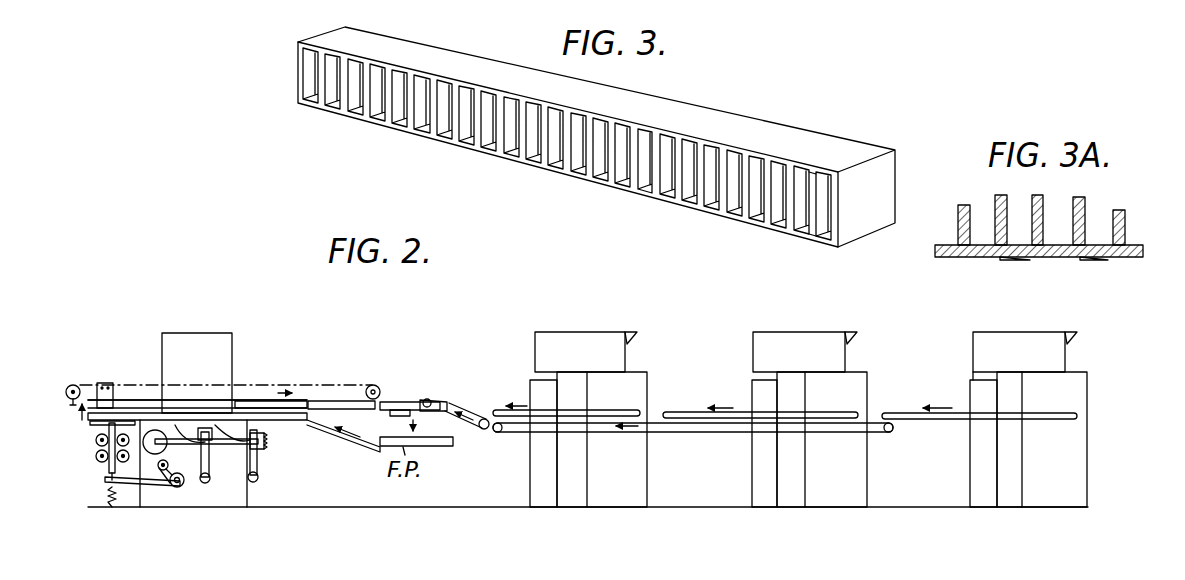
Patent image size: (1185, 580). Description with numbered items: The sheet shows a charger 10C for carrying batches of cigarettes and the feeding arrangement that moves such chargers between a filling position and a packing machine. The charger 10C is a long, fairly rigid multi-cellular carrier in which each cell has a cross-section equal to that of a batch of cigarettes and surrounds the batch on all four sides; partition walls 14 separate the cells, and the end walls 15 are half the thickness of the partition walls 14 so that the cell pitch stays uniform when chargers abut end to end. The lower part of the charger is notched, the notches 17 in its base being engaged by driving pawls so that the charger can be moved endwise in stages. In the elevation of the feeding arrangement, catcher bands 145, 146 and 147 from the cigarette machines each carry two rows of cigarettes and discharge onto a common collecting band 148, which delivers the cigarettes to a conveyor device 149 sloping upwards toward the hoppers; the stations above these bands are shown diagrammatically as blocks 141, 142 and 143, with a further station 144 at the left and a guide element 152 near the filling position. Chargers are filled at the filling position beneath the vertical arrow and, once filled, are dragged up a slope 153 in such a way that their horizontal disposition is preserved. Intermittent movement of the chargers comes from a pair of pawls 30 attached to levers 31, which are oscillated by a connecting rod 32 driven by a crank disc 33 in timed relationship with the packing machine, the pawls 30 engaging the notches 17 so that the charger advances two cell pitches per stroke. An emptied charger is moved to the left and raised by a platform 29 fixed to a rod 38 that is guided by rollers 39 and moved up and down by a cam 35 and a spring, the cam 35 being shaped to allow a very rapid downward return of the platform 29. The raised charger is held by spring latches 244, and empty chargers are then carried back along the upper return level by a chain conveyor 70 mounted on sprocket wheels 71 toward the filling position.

In FIG. 3, the charger 10C is at (880, 190).
In FIG. 3A, the charger 10C is at (975, 258).
In FIG. 2, the charger 10C is at (245, 405).
In FIG. 3, the partition walls 14 is at (745, 168).
In FIG. 3A, the partition walls 14 is at (1085, 212).
In FIG. 3, the end walls 15 is at (833, 212).
In FIG. 3A, the notches 17 is at (1015, 259).
In FIG. 2, the platform 29 is at (92, 421).
In FIG. 2, the pawls 30 is at (183, 447).
In FIG. 2, the levers 31 is at (258, 470).
In FIG. 2, the connecting rod 32 is at (233, 445).
In FIG. 2, the crank disc 33 is at (140, 455).
In FIG. 2, the cam 35 is at (168, 472).
In FIG. 2, the rod 38 is at (108, 463).
In FIG. 2, the rollers 39 is at (96, 446).
In FIG. 2, the chain conveyor 70 is at (153, 383).
In FIG. 2, the sprocket wheels 71 is at (75, 385).
In FIG. 2, the first processing station 141 is at (592, 343).
In FIG. 2, the second processing station 142 is at (812, 340).
In FIG. 2, the third processing station 143 is at (1030, 343).
In FIG. 2, the loading station 144 is at (205, 340).
In FIG. 2, the catcher band 145 is at (627, 410).
In FIG. 2, the catcher band 146 is at (845, 412).
In FIG. 2, the catcher band 147 is at (1027, 413).
In FIG. 2, the collecting band 148 is at (745, 433).
In FIG. 2, the conveyor device 149 is at (473, 429).
In FIG. 2, the guide roller 152 is at (403, 402).
In FIG. 2, the slope 153 is at (345, 436).
In FIG. 2, the spring latches 244 is at (108, 383).